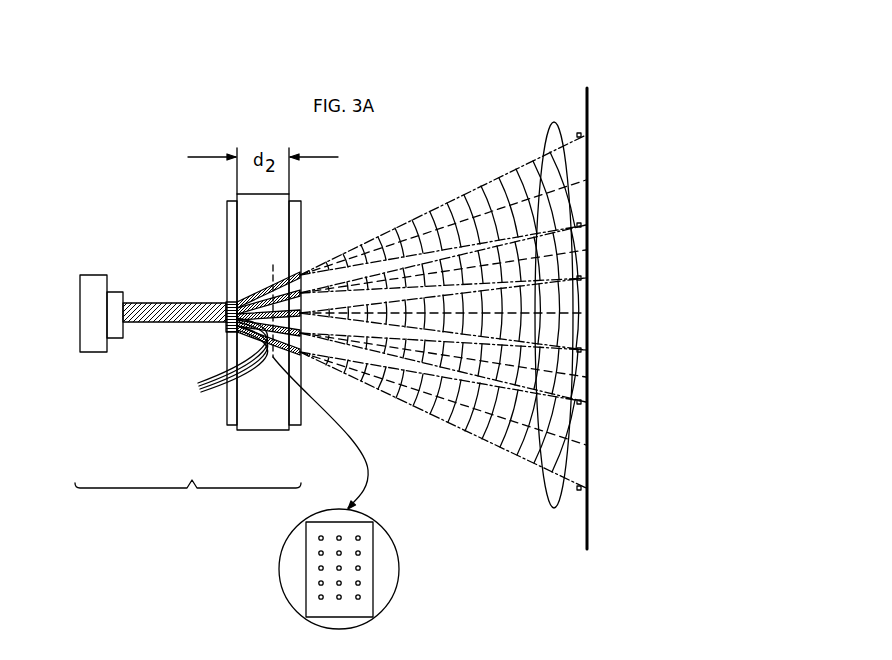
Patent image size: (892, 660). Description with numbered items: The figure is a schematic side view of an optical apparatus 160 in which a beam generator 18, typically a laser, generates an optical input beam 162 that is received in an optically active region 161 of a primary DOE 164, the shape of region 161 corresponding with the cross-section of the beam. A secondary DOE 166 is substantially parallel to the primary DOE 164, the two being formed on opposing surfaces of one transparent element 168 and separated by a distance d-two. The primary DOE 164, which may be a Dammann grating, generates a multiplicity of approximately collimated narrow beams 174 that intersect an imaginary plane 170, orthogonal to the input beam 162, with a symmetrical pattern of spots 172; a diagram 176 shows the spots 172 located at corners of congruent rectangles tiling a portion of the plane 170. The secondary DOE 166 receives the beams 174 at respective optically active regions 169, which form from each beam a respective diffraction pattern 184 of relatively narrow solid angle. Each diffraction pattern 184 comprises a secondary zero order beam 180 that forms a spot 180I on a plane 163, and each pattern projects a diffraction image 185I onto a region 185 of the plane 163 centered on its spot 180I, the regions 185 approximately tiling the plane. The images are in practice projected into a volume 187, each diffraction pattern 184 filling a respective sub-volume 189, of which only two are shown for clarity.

The beam generator 18 is at (90, 353).
The optical apparatus 160 is at (188, 503).
The optically active region 161 is at (230, 300).
The optical input beam 162 is at (175, 321).
The plane 163 is at (589, 523).
The primary DOE 164 is at (232, 427).
The secondary DOE 166 is at (295, 428).
The transparent element 168 is at (278, 194).
The optically active regions 169 is at (334, 279).
The imaginary plane 170 is at (273, 263).
The spots 172 is at (317, 583).
The approximately collimated narrow beams 174 is at (227, 365).
The diagram 176 is at (388, 524).
The secondary zero order beam 180 is at (472, 265).
The spot 180I is at (588, 183).
The diffraction pattern 184 is at (442, 203).
The region 185 is at (588, 203).
The diffraction image 185I is at (588, 195).
The volume 187 is at (557, 509).
The sub-volume 189 is at (588, 156).